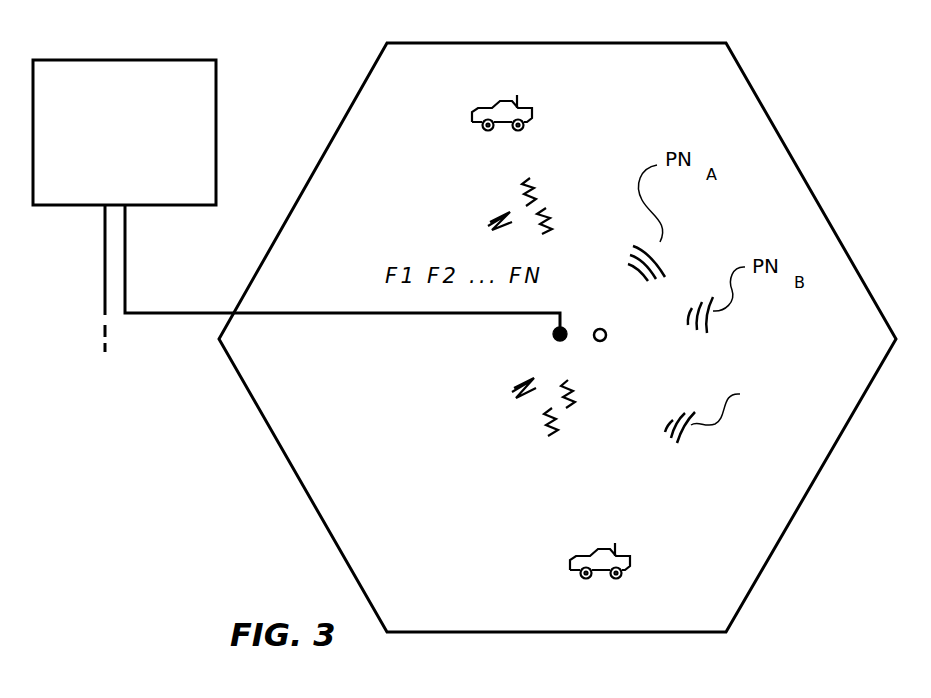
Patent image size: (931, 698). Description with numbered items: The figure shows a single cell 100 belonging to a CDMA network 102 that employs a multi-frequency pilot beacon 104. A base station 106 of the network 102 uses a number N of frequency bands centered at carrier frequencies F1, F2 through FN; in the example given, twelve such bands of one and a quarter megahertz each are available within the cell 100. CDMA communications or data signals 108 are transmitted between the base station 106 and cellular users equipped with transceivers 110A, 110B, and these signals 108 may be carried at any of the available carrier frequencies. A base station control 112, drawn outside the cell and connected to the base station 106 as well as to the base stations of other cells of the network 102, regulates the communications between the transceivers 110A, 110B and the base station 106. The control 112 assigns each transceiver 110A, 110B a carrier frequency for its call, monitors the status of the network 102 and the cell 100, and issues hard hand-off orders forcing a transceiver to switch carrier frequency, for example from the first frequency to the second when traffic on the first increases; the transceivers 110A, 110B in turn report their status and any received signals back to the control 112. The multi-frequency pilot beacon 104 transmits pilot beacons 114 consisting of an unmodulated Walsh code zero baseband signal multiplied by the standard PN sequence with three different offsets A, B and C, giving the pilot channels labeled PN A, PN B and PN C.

The cell 100 is at (506, 337).
The CDMA network 102 is at (210, 512).
The multi-frequency pilot beacon 104 is at (600, 328).
The base station 106 is at (555, 333).
The CDMA communications or data signals 108 is at (469, 225).
The transceiver 110A is at (472, 118).
The transceiver 110B is at (570, 566).
The base station control 112 is at (217, 82).
The pilot beacons 114 is at (702, 467).